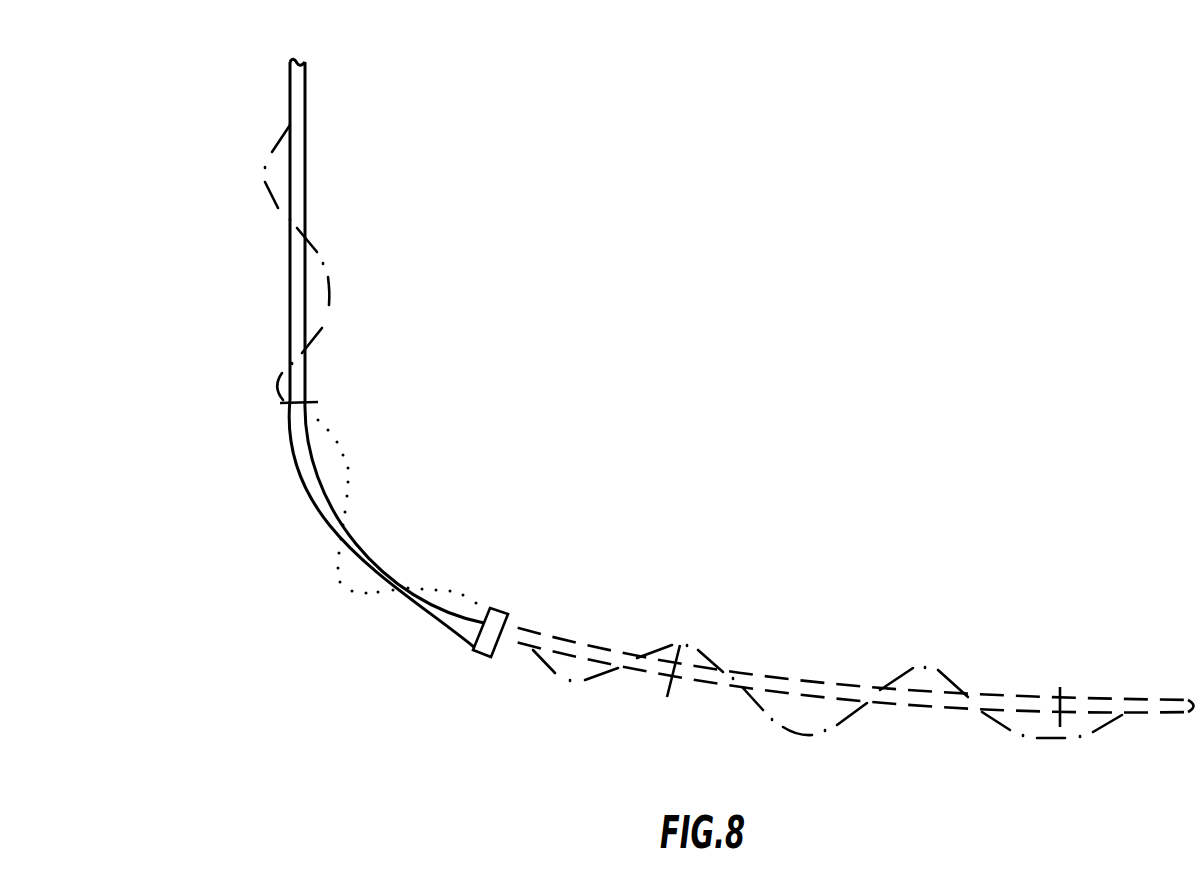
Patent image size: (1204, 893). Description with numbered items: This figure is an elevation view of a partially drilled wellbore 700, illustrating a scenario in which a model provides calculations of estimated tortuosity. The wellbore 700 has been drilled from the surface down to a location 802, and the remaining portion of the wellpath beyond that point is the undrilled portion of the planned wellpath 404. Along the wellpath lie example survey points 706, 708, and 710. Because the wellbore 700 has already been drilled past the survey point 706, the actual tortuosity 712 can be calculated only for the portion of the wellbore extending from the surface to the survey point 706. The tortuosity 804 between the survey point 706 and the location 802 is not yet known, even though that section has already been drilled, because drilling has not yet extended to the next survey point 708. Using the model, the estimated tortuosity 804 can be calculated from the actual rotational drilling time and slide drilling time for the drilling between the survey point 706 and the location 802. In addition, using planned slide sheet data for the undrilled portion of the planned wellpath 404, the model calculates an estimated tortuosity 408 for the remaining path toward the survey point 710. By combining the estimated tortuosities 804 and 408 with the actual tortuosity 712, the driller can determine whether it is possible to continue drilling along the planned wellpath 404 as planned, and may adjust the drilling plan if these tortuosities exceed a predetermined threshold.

The partially drilled wellbore 700 is at (310, 75).
The actual tortuosity 712 is at (326, 320).
The survey point 706 is at (286, 403).
The estimated tortuosity 804 is at (347, 495).
The location 802 is at (470, 645).
The planned wellpath 404 is at (558, 637).
The estimated tortuosity 408 is at (957, 683).
The survey point 708 is at (668, 680).
The survey point 710 is at (1055, 727).